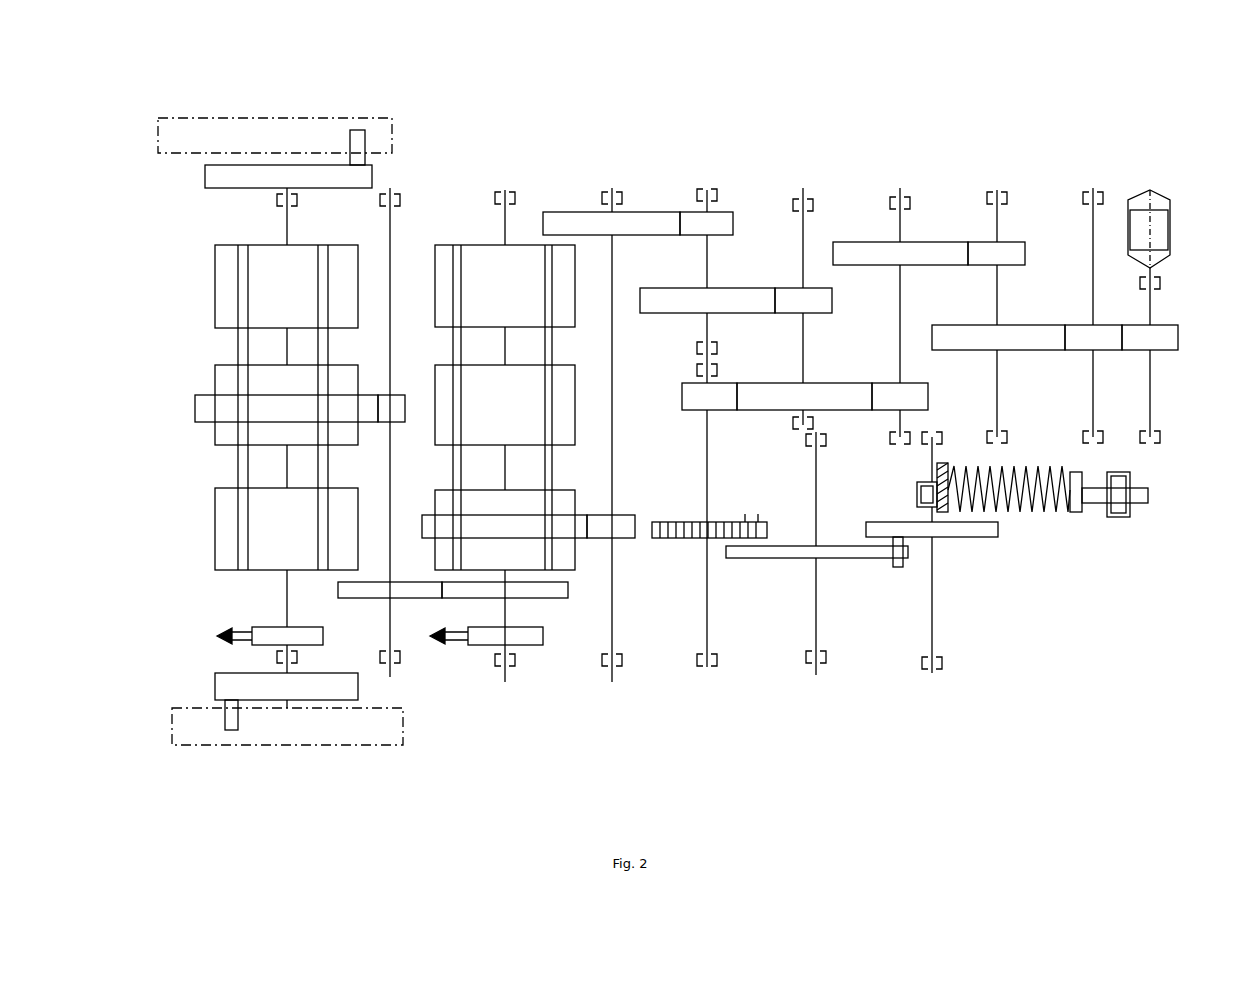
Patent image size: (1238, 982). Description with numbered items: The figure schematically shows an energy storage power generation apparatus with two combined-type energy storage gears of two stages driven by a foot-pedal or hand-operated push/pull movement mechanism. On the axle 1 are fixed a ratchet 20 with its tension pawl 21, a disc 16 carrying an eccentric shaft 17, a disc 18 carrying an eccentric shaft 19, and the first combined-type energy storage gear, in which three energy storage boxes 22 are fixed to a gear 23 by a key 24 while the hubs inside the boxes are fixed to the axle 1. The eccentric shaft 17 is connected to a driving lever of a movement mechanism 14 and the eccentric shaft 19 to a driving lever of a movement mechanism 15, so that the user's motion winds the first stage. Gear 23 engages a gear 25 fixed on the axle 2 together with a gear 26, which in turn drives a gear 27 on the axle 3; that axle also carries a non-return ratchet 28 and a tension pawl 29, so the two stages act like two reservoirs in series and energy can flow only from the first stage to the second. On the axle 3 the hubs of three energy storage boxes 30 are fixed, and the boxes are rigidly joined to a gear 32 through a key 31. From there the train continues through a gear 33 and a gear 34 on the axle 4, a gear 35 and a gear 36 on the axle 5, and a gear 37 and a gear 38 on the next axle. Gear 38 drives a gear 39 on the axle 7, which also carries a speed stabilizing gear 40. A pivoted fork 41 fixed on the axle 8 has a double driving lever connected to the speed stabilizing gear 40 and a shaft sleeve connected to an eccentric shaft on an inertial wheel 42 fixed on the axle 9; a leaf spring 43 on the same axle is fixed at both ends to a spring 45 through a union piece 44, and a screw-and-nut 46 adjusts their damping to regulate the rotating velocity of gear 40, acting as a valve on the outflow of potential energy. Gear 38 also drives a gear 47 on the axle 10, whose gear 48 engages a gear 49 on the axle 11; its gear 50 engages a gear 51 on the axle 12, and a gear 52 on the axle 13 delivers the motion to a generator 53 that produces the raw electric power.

The axle 1 is at (285, 196).
The axle 2 is at (390, 186).
The axle 3 is at (505, 190).
The axle 4 is at (610, 198).
The axle 5 is at (706, 190).
The axle 7 is at (708, 662).
The axle 8 is at (805, 190).
The axle 9 is at (933, 583).
The axle 10 is at (902, 190).
The axle 11 is at (999, 190).
The axle 12 is at (1095, 190).
The axle 13 is at (1150, 440).
The movement mechanism 14 is at (210, 130).
The movement mechanism 15 is at (200, 720).
The disc 16 is at (260, 178).
The eccentric shaft 17 is at (352, 138).
The disc 18 is at (288, 687).
The eccentric shaft 19 is at (225, 722).
The ratchet 20 is at (268, 634).
The tension pawl 21 is at (217, 636).
The energy storage boxes 22 is at (225, 258).
The gear 23 is at (210, 405).
The key 24 is at (247, 340).
The gear 25 is at (395, 400).
The gear 26 is at (377, 593).
The gear 27 is at (502, 633).
The non-return ratchet 28 is at (520, 598).
The tension pawl 29 is at (478, 540).
The energy storage boxes 30 is at (493, 280).
The key 31 is at (453, 250).
The gear 32 is at (518, 527).
The gear 33 is at (617, 530).
The gear 34 is at (563, 227).
The gear 35 is at (690, 232).
The gear 36 is at (663, 308).
The gear 37 is at (820, 303).
The gear 38 is at (757, 397).
The gear 39 is at (720, 395).
The speed stabilizing gear 40 is at (655, 540).
The pivoted fork 41 is at (862, 558).
The inertial wheel 42 is at (947, 530).
The leaf spring 43 is at (993, 528).
The union piece 44 is at (985, 510).
The spring 45 is at (948, 510).
The screw-and-nut 46 is at (1133, 503).
The gear 47 is at (912, 397).
The gear 48 is at (863, 252).
The gear 49 is at (1002, 250).
The gear 50 is at (1000, 337).
The gear 51 is at (1095, 333).
The gear 52 is at (1160, 333).
The generator 53 is at (1152, 200).